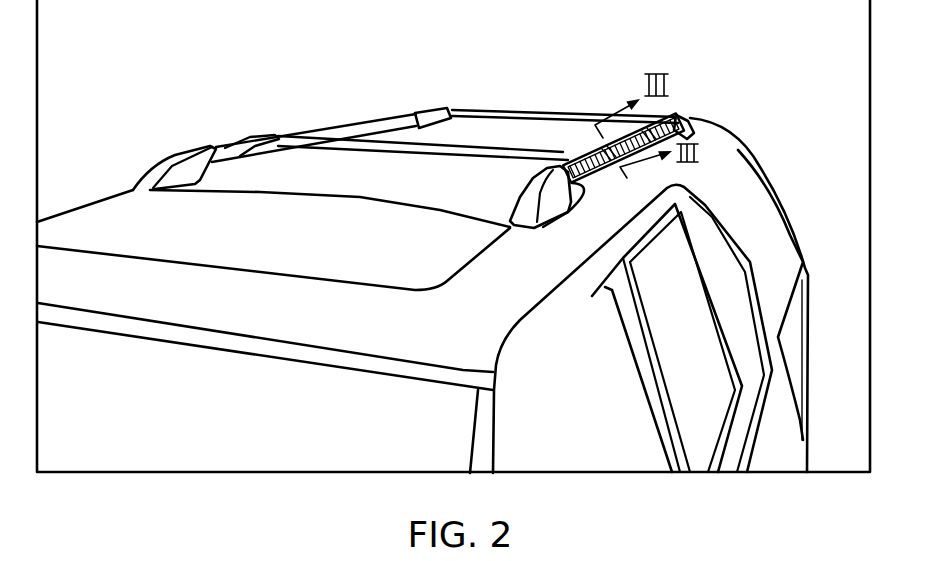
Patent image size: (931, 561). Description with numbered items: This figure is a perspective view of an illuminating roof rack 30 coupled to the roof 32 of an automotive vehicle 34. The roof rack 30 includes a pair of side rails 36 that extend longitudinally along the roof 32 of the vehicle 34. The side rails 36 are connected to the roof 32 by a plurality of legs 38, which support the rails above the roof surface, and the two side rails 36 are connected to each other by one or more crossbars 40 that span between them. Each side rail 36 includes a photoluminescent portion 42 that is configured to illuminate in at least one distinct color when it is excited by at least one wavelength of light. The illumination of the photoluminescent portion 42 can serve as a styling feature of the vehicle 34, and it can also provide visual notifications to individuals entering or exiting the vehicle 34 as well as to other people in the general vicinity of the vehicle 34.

The illuminating roof rack 30 is at (688, 51).
The roof 32 is at (490, 130).
The automotive vehicle 34 is at (733, 136).
The side rail 36 is at (317, 127).
The leg 38 is at (177, 153).
The crossbar 40 is at (392, 147).
The photoluminescent portion 42 is at (598, 187).